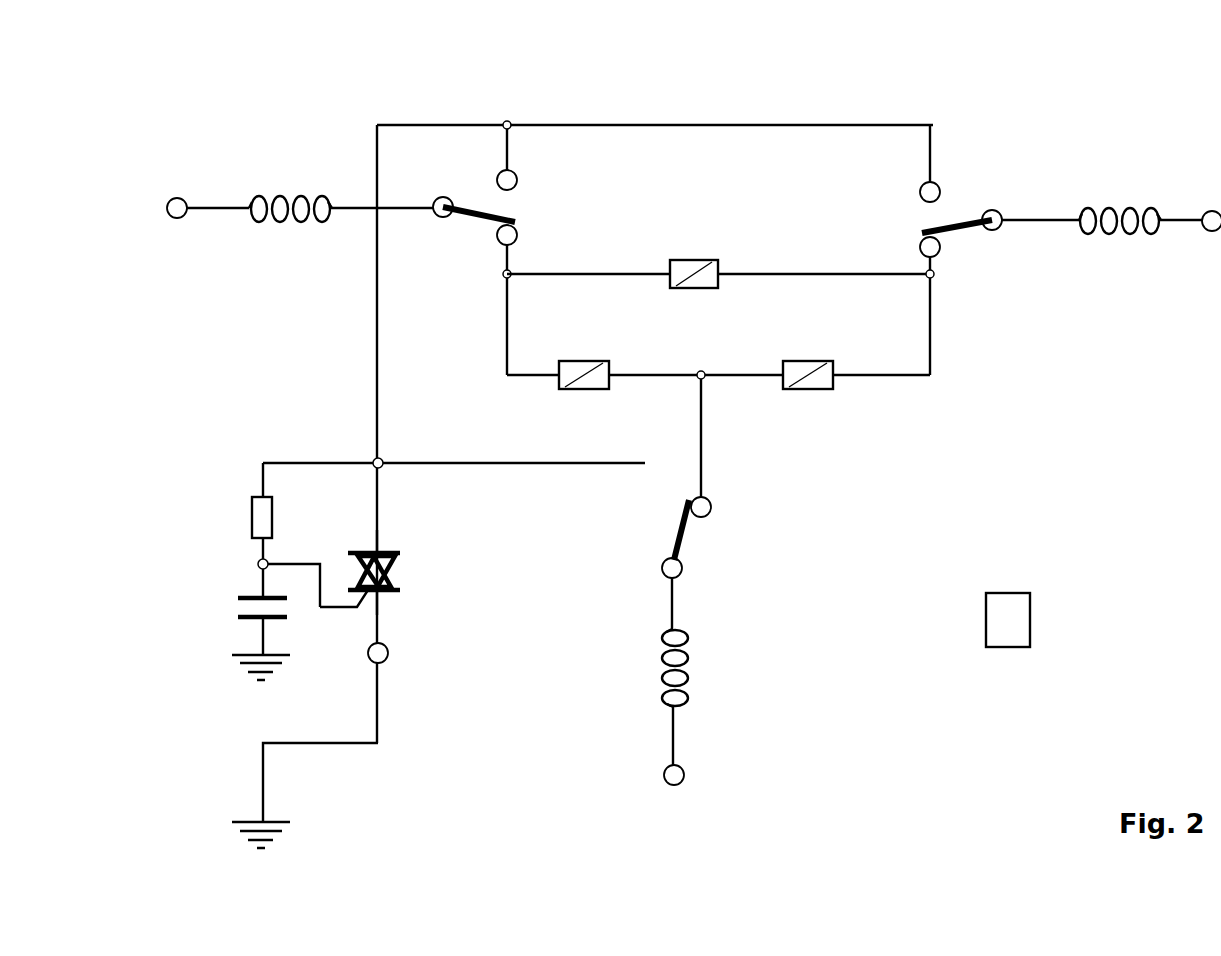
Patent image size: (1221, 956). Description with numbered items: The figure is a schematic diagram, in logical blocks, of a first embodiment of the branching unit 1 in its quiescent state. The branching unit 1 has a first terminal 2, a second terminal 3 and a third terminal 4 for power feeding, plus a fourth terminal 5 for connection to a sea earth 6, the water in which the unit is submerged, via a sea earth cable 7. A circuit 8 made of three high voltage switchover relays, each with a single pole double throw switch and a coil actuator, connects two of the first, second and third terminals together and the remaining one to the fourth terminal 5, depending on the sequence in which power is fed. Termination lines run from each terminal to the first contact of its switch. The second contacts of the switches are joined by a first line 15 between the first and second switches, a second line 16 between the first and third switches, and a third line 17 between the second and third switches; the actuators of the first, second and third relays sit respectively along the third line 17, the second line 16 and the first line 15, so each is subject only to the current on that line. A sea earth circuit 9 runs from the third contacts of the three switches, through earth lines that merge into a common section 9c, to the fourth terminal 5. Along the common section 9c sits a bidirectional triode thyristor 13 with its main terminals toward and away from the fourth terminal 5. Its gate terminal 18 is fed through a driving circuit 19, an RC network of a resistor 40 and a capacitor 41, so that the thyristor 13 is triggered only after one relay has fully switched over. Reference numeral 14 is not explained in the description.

The branching unit 1 is at (1088, 662).
The first terminal 2 is at (177, 218).
The second terminal 3 is at (1212, 231).
The third terminal 4 is at (684, 783).
The fourth terminal 5 is at (388, 658).
The sea earth 6 is at (313, 826).
The sea earth cable 7 is at (380, 743).
The circuit 8 is at (913, 556).
The sea earth circuit 9 is at (275, 372).
The common section 9c is at (376, 503).
The bidirectional triode thyristor 13 is at (413, 587).
The relay line 14 is at (914, 408).
The first line 15 is at (582, 274).
The second line 16 is at (502, 327).
The third line 17 is at (930, 375).
The gate terminal 18 is at (345, 610).
The driving circuit 19 is at (187, 544).
The resistor 40 is at (248, 528).
The capacitor 41 is at (232, 603).